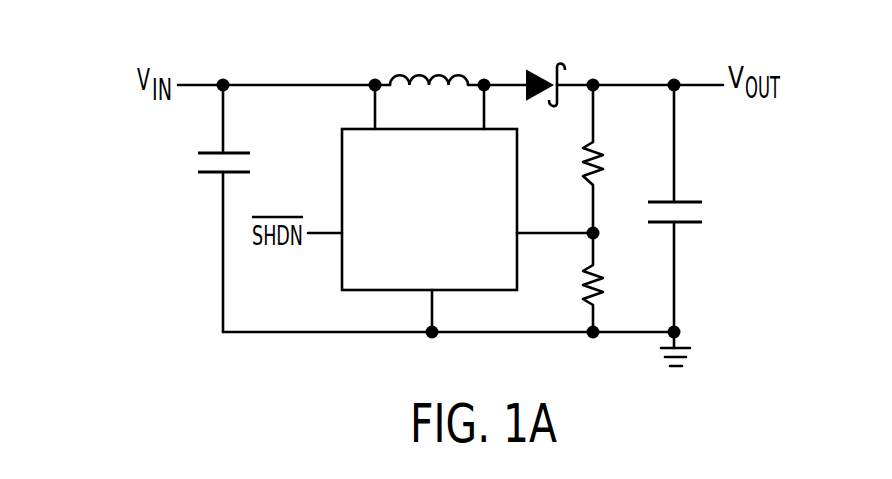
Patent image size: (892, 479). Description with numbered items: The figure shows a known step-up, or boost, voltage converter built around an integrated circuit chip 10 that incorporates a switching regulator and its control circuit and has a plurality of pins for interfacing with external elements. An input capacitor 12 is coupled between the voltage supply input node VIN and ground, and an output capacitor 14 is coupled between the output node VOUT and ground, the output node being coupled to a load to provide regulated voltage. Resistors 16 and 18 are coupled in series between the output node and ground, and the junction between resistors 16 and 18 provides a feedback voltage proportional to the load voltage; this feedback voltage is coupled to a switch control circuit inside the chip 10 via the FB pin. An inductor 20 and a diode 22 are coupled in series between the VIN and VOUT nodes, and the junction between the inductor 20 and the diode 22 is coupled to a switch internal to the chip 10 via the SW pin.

The integrated circuit chip 10 is at (342, 170).
The input capacitor 12 is at (215, 176).
The output capacitor 14 is at (690, 226).
The resistor 16 is at (600, 152).
The resistor 18 is at (600, 278).
The inductor 20 is at (425, 70).
The diode 22 is at (563, 62).